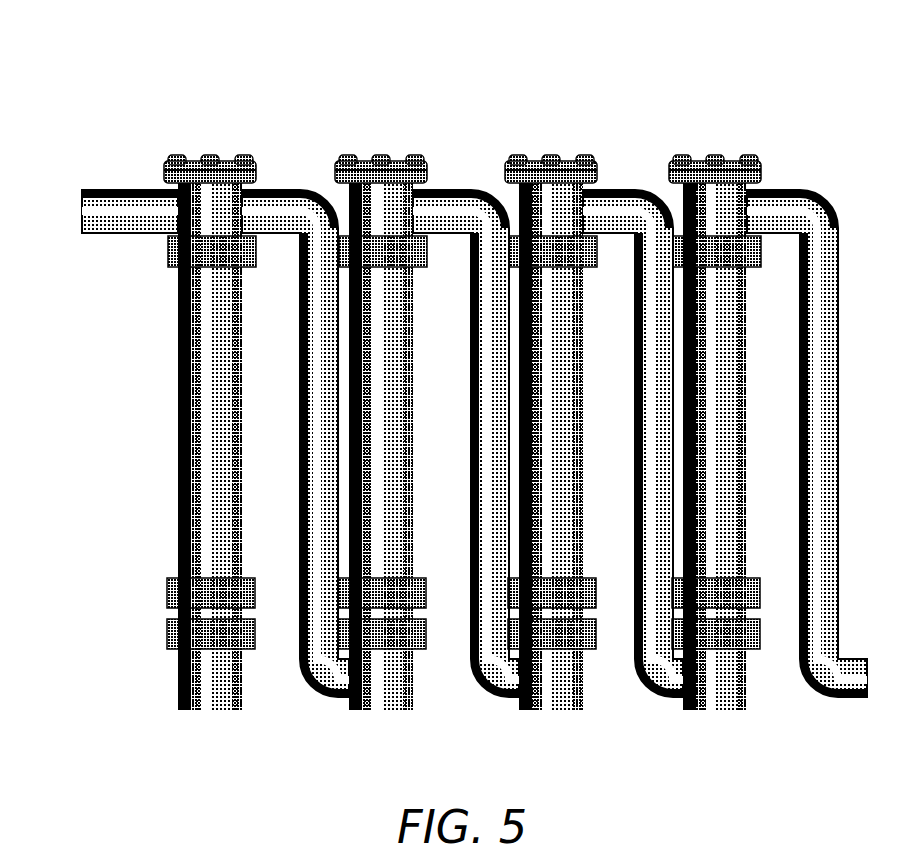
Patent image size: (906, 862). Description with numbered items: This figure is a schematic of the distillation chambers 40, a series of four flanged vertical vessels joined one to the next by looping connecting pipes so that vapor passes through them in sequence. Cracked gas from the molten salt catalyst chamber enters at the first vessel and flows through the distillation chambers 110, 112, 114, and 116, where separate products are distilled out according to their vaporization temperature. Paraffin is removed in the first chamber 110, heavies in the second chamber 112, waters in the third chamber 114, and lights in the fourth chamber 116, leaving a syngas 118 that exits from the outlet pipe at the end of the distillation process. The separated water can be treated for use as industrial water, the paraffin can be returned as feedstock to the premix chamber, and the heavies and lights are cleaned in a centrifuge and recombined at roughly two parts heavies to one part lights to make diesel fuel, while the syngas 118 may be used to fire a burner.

The distillation chambers 40 is at (157, 74).
The paraffin distillation chamber 110 is at (168, 433).
The heavies distillation chamber 112 is at (378, 163).
The waters distillation chamber 114 is at (550, 163).
The lights distillation chamber 116 is at (716, 163).
The syngas 118 is at (859, 707).